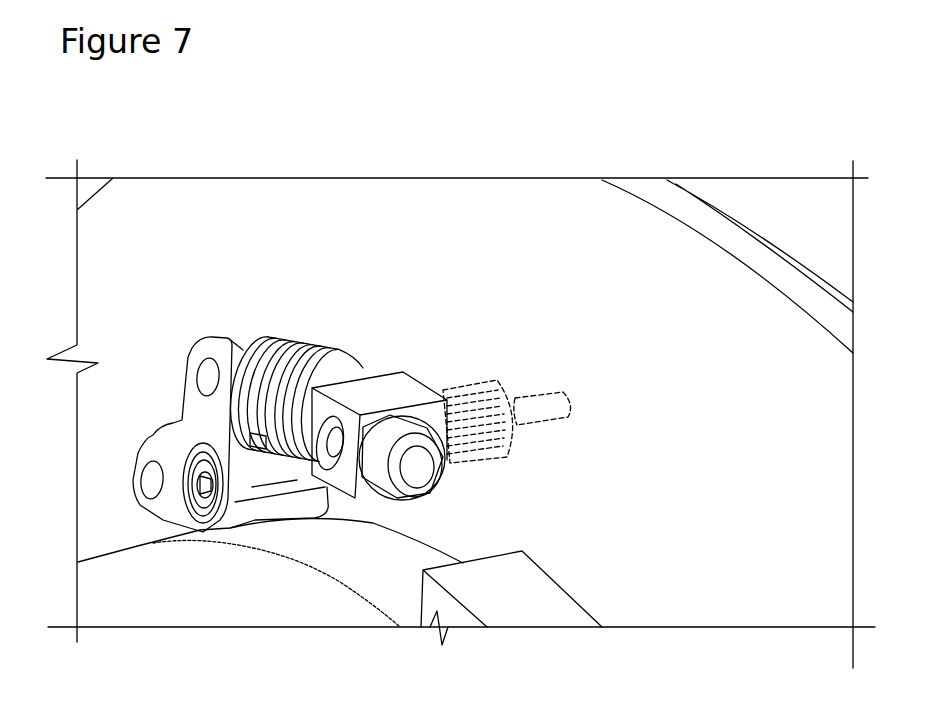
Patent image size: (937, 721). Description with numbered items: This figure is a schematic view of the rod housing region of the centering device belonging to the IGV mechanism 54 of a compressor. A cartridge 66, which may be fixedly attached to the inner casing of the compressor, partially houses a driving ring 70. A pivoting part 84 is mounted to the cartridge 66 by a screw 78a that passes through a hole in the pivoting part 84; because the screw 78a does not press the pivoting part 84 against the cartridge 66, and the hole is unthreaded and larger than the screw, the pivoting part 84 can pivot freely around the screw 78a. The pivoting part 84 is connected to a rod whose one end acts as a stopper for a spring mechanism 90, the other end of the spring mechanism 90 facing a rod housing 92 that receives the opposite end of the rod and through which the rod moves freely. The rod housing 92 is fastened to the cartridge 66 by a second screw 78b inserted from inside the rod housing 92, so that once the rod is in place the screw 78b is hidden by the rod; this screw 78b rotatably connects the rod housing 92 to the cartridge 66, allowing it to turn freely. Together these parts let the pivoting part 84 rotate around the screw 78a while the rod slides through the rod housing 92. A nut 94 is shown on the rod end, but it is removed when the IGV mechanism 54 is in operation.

The IGV mechanism 54 is at (518, 221).
The cartridge 66 is at (697, 267).
The driving ring 70 is at (140, 592).
The screw 78a is at (193, 490).
The screw 78b is at (530, 398).
The pivoting part 84 is at (192, 413).
The spring mechanism 90 is at (313, 333).
The rod housing 92 is at (352, 400).
The nut 94 is at (410, 488).